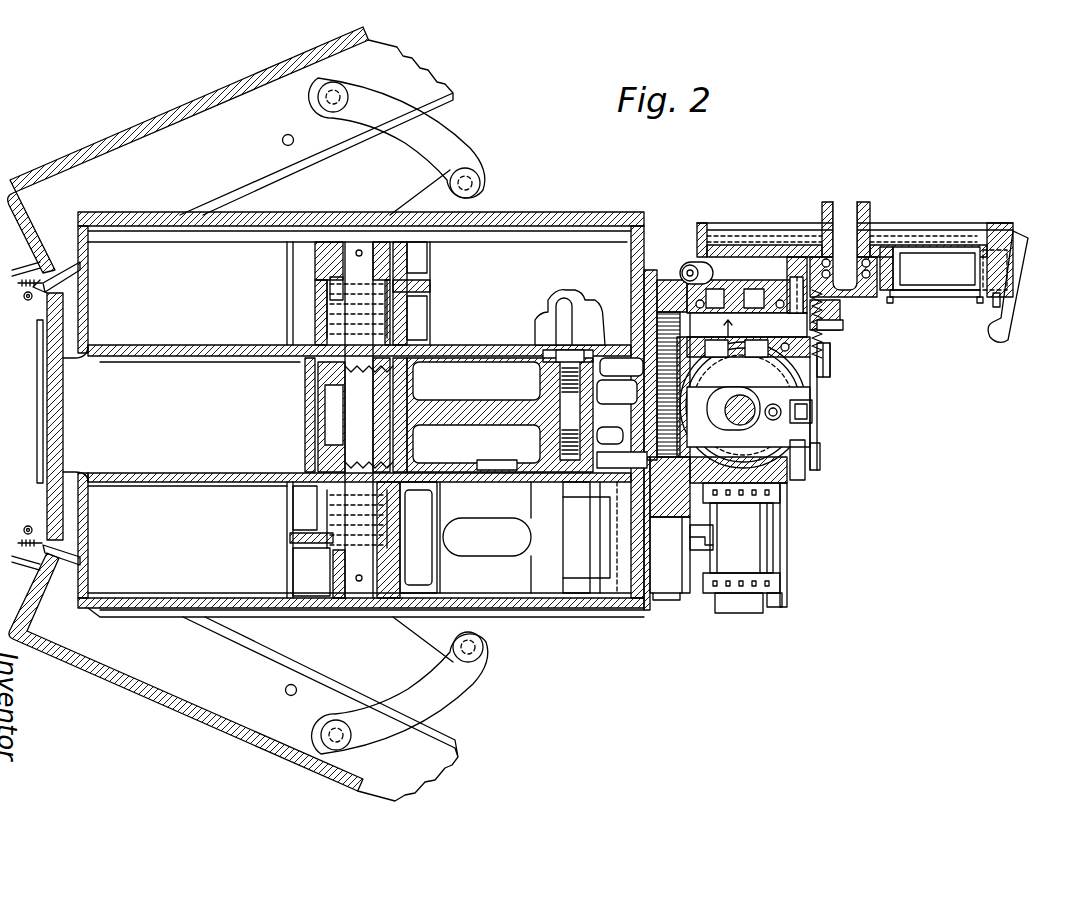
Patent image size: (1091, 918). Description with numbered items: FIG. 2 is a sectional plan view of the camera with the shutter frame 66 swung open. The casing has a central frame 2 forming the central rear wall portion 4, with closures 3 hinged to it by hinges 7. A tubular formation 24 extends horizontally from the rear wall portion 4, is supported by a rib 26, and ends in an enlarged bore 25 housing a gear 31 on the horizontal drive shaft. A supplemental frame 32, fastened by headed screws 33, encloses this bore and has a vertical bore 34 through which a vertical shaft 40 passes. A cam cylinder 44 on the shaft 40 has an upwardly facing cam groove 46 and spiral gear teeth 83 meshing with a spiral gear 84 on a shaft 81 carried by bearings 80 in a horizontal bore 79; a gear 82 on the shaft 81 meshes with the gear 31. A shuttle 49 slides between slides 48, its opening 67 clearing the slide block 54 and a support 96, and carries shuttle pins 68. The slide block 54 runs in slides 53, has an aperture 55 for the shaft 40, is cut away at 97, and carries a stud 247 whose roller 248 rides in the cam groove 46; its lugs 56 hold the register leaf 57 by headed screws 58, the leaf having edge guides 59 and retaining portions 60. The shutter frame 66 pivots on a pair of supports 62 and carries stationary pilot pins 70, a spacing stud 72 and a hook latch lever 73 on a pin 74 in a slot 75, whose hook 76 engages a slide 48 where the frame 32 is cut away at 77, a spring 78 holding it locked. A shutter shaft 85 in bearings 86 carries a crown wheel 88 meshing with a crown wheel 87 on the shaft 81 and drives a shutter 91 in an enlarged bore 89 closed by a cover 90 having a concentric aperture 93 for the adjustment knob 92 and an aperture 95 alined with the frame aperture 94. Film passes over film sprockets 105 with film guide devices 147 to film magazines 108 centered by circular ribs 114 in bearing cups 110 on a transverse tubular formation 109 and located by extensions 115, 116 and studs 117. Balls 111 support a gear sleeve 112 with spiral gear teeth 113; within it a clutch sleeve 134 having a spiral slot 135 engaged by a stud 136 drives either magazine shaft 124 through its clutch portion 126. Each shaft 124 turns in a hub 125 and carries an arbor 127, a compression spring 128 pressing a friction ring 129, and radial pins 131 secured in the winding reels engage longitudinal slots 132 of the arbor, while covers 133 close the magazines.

The central frame 2 is at (500, 386).
The closure 3 is at (142, 130).
The central rear wall portion 4 is at (37, 352).
The hinge 7 is at (28, 533).
The tubular formation 24 is at (122, 366).
The enlarged bore 25 is at (643, 297).
The rib 26 is at (643, 395).
The gear 31 is at (643, 367).
The supplemental frame 32 is at (700, 518).
The headed screws 33 is at (710, 547).
The vertical bore 34 is at (792, 484).
The shaft 40 is at (797, 387).
The cam cylinder 44 is at (800, 471).
The cam groove 46 is at (638, 448).
The slides 48 is at (817, 337).
The shuttle 49 is at (823, 347).
The slides 53 is at (643, 461).
The slide block 54 is at (716, 348).
The aperture 55 is at (726, 419).
The lugs 56 is at (817, 433).
The register leaf 57 is at (827, 377).
The headed screws 58 is at (827, 437).
The parallel edges 59 is at (830, 360).
The retaining portions 60 is at (817, 461).
The supports 62 is at (832, 303).
The shutter frame 66 is at (995, 226).
The opening of the shuttle 67 is at (830, 400).
The shuttle pins 68 is at (817, 363).
The stationary pilot pins 70 is at (892, 300).
The spacing stud 72 is at (993, 307).
The hook latch lever 73 is at (1013, 307).
The pin 74 is at (1010, 276).
The horizontal slot 75 is at (1017, 250).
The hook 76 is at (1008, 327).
The cut away portion 77 is at (800, 477).
The coiled compression spring 78 is at (1017, 262).
The horizontal bore 79 is at (683, 272).
The bearings 80 is at (686, 265).
The shaft 81 is at (715, 298).
The gear 82 is at (643, 313).
The spiral gear teeth 83 is at (754, 298).
The spiral gear 84 is at (730, 283).
The shutter shaft 85 is at (869, 225).
The bearings 86 is at (893, 252).
The crown wheel 87 is at (820, 315).
The crown wheel 88 is at (863, 303).
The enlarged bore 89 is at (970, 227).
The cover 90 is at (855, 225).
The shutter 91 is at (710, 232).
The adjustment knob 92 is at (848, 232).
The concentric aperture 93 is at (823, 226).
The frame aperture 94 is at (970, 289).
The aperture 95 is at (913, 222).
The support 96 is at (812, 410).
The cut away portion 97 is at (827, 417).
The film sprocket 105 is at (743, 540).
The film magazine 108 is at (517, 250).
The transverse tubular formation 109 is at (307, 424).
The bearing cup 110 is at (304, 365).
The balls 111 is at (311, 384).
The gear sleeve 112 is at (305, 402).
The spiral gear teeth 113 is at (309, 428).
The circular ribs 114 is at (287, 349).
The extension 115 is at (590, 313).
The extension 116 is at (585, 500).
The studs 117 is at (620, 592).
The shaft 124 is at (359, 240).
The hub 125 is at (330, 297).
The enlarged clutch portion 126 is at (418, 337).
The arbor 127 is at (292, 262).
The coiled compression spring 128 is at (320, 300).
The friction ring 129 is at (336, 240).
The radial pins 131 is at (430, 290).
The longitudinal slots 132 is at (430, 263).
The covers 133 is at (588, 225).
The clutch sleeve 134 is at (413, 380).
The spiral slot 135 is at (412, 400).
The stud 136 is at (421, 405).
The film guide device 147 is at (780, 563).
The stud 247 is at (820, 400).
The roller 248 is at (838, 450).